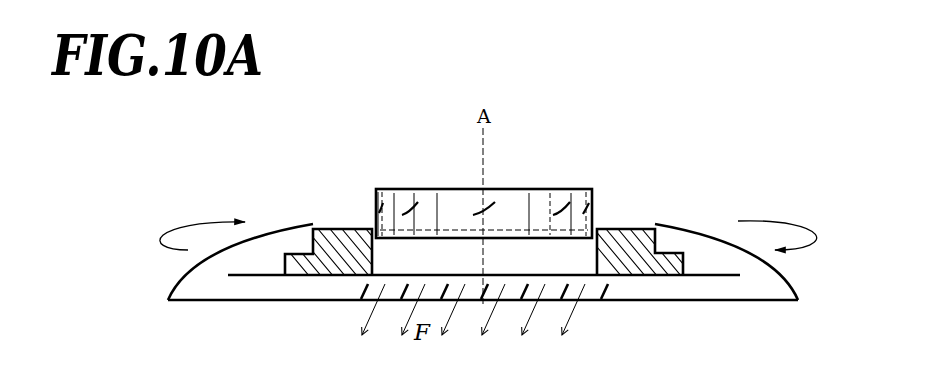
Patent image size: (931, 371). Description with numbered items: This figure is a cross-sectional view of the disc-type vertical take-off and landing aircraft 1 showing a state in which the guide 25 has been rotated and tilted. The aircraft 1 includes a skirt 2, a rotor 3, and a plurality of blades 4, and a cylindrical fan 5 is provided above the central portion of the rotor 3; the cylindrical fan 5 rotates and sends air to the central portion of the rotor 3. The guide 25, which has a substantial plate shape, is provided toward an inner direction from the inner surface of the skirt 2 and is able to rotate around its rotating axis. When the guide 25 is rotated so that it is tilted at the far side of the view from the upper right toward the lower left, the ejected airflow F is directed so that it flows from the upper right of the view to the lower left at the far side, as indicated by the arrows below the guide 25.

The disc-type vertical take-off and landing aircraft 1 is at (572, 167).
The skirt 2 is at (294, 225).
The rotor 3 is at (259, 277).
The blades 4 is at (333, 229).
The cylindrical fan 5 is at (396, 190).
The guide 25 is at (604, 292).